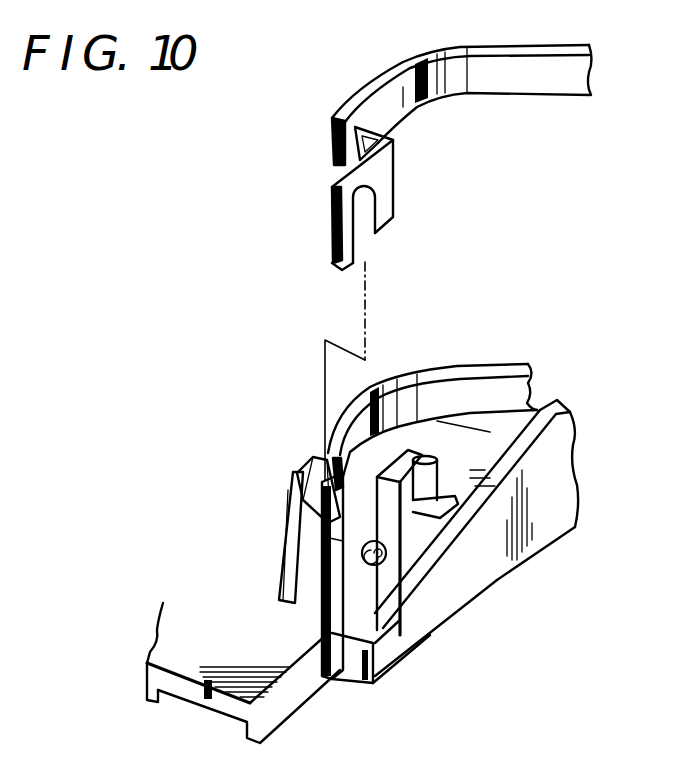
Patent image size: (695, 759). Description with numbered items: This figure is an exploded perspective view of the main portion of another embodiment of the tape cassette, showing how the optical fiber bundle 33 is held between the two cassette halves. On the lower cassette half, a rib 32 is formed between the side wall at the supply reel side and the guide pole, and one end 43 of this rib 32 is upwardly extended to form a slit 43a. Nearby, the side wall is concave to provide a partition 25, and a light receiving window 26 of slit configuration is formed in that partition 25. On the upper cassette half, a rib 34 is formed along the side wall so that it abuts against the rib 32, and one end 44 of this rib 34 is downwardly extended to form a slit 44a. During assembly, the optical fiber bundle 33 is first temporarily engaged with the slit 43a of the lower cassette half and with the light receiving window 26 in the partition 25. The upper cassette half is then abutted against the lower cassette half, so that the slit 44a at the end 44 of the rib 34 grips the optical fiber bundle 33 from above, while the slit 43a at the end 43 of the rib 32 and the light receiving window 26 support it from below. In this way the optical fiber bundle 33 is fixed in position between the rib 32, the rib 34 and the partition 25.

The partition 25 is at (320, 613).
The light receiving window 26 is at (387, 505).
The rib 32 is at (448, 375).
The optical fiber bundle 33 is at (383, 525).
The rib 34 is at (528, 80).
The end of the rib 43 is at (280, 573).
The slit 43a is at (300, 470).
The end of the rib 44 is at (425, 199).
The slit 44a is at (362, 225).